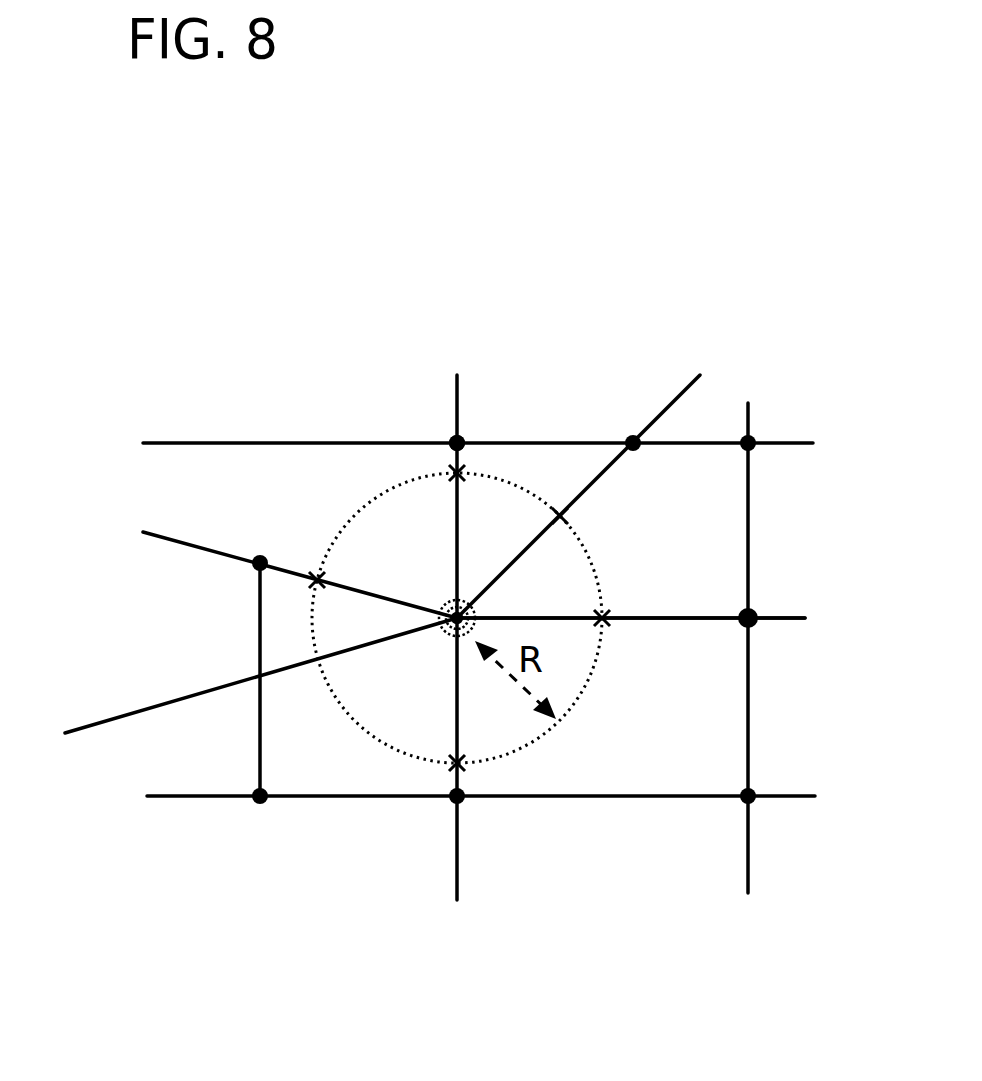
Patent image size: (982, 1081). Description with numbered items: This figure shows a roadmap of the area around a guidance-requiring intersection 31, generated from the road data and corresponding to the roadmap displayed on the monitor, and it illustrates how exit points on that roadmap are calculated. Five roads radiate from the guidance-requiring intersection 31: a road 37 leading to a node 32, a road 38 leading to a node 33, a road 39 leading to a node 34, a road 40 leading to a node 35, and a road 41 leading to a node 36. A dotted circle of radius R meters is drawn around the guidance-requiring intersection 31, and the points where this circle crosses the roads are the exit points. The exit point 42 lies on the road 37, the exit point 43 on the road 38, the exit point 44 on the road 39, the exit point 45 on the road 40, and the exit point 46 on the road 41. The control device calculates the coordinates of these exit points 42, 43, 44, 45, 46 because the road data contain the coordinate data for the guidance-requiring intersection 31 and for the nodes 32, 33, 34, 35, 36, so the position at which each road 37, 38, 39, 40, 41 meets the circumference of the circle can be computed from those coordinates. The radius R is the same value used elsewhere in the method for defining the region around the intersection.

The guidance-requiring intersection 31 is at (238, 687).
The node 32 is at (762, 610).
The node 33 is at (632, 442).
The node 34 is at (452, 440).
The node 35 is at (257, 566).
The node 36 is at (462, 800).
The road 37 is at (775, 622).
The road 38 is at (672, 400).
The road 39 is at (455, 385).
The road 40 is at (183, 545).
The road 41 is at (458, 867).
The exit point 42 is at (605, 615).
The exit point 43 is at (565, 518).
The exit point 44 is at (455, 475).
The exit point 45 is at (313, 577).
The exit point 46 is at (452, 757).